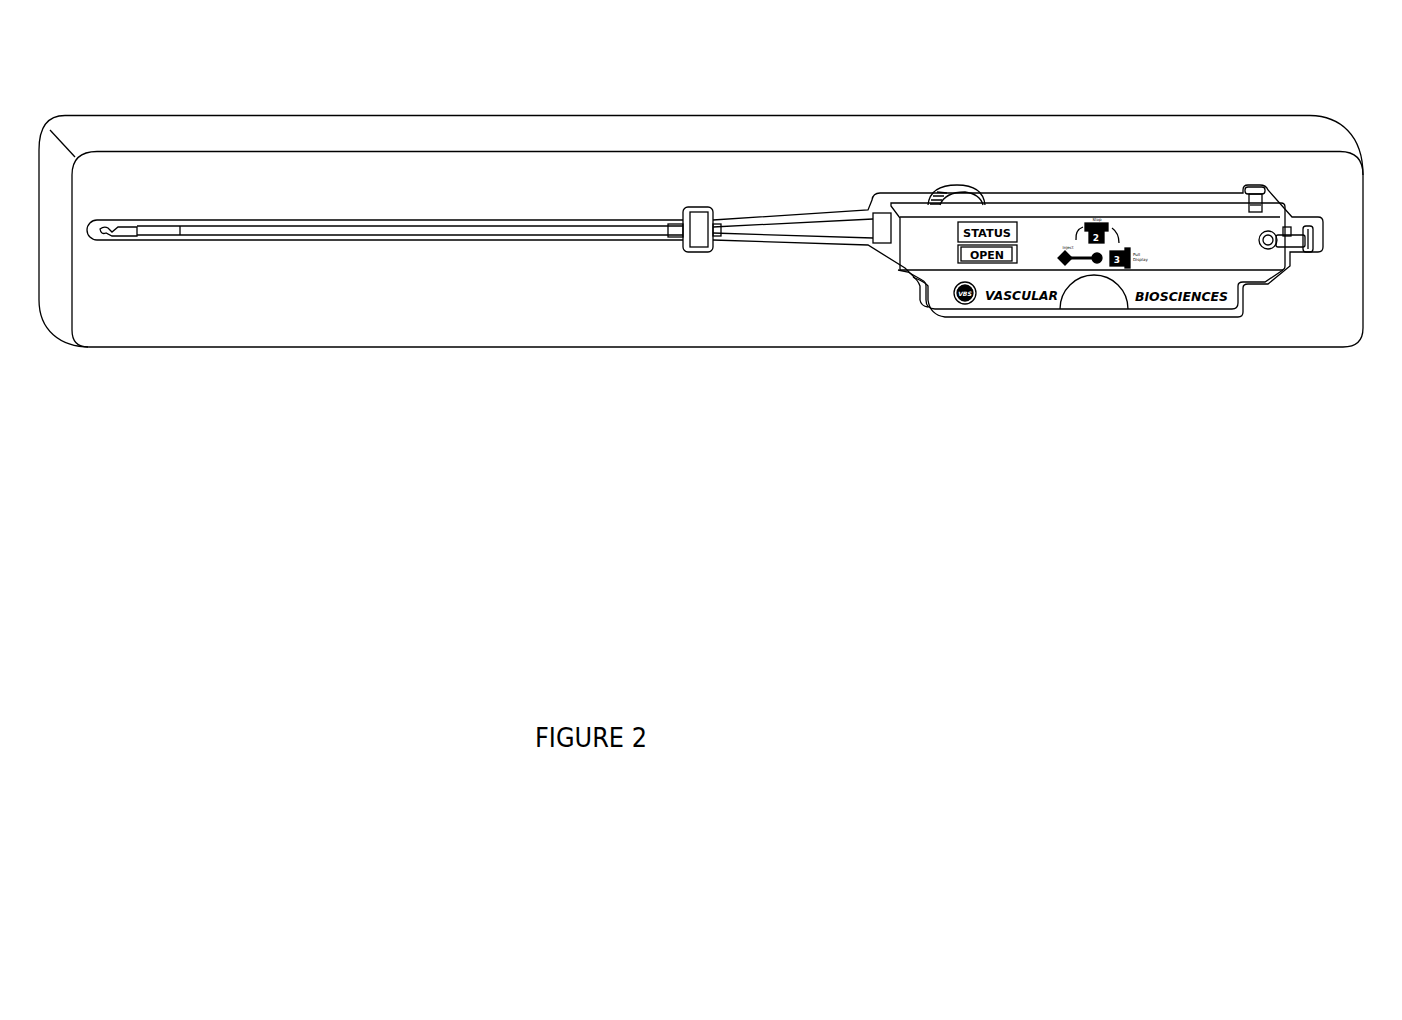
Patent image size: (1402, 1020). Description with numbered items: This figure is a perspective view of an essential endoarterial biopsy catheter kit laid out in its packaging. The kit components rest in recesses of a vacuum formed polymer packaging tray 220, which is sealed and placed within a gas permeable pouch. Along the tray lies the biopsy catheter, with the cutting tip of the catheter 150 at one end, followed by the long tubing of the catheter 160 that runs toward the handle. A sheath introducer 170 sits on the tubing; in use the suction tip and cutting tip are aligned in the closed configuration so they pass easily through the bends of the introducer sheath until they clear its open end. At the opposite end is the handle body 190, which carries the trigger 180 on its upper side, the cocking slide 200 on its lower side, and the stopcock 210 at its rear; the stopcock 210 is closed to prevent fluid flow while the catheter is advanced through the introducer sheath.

The cutting tip of the catheter 150 is at (126, 224).
The tubing of the catheter 160 is at (405, 223).
The sheath introducer 170 is at (699, 208).
The trigger 180 is at (958, 186).
The handle body 190 is at (1193, 195).
The cocking slide 200 is at (1093, 312).
The stopcock 210 is at (1280, 255).
The vacuum formed polymer packaging tray 220 is at (1333, 328).